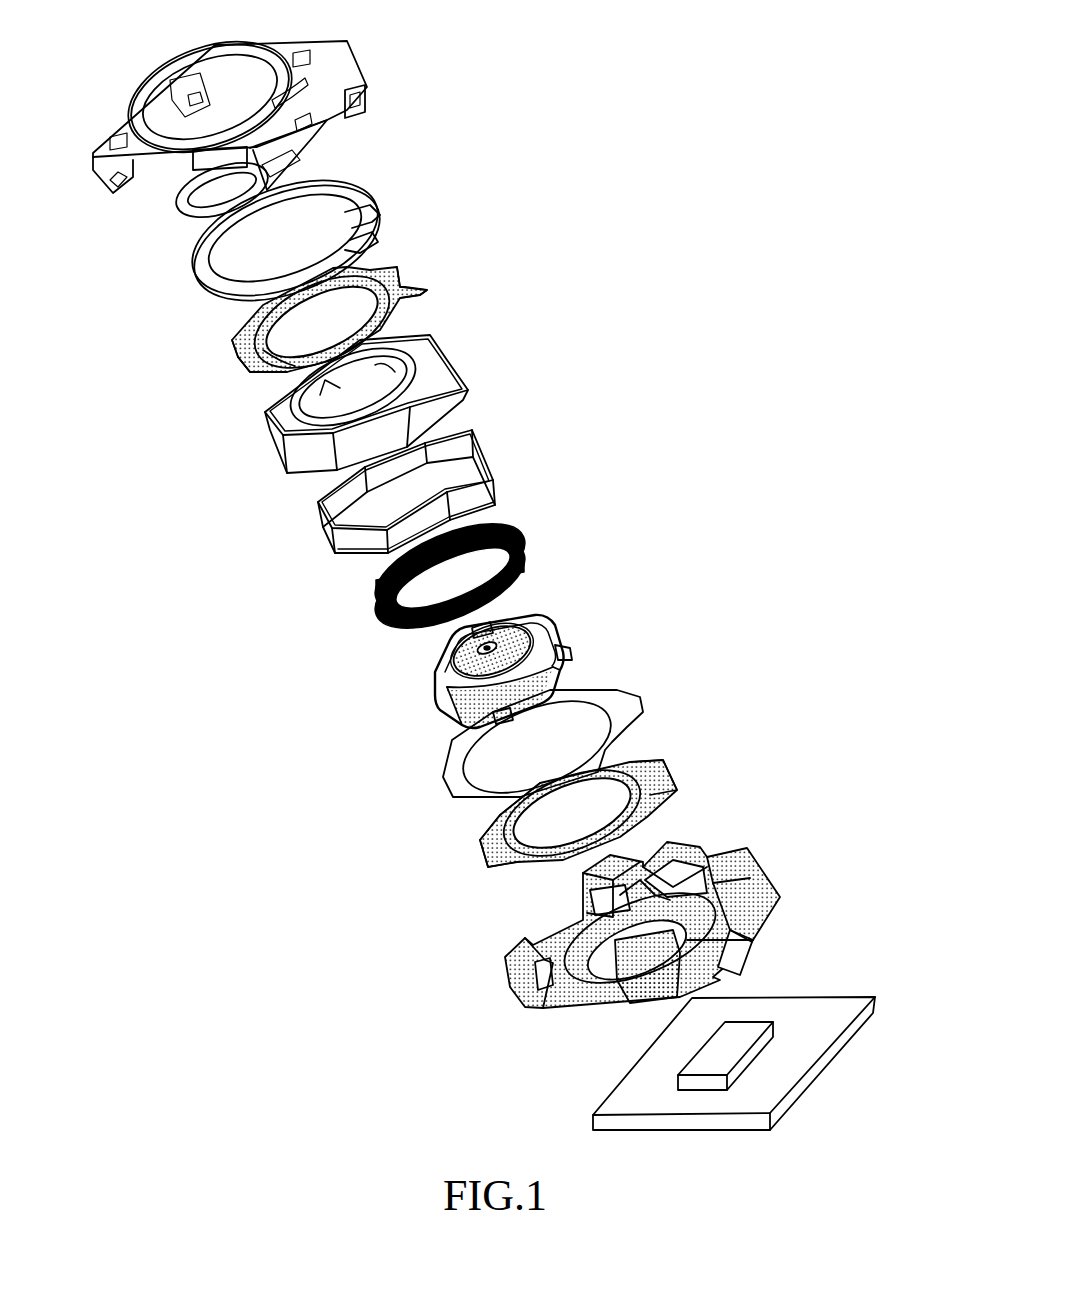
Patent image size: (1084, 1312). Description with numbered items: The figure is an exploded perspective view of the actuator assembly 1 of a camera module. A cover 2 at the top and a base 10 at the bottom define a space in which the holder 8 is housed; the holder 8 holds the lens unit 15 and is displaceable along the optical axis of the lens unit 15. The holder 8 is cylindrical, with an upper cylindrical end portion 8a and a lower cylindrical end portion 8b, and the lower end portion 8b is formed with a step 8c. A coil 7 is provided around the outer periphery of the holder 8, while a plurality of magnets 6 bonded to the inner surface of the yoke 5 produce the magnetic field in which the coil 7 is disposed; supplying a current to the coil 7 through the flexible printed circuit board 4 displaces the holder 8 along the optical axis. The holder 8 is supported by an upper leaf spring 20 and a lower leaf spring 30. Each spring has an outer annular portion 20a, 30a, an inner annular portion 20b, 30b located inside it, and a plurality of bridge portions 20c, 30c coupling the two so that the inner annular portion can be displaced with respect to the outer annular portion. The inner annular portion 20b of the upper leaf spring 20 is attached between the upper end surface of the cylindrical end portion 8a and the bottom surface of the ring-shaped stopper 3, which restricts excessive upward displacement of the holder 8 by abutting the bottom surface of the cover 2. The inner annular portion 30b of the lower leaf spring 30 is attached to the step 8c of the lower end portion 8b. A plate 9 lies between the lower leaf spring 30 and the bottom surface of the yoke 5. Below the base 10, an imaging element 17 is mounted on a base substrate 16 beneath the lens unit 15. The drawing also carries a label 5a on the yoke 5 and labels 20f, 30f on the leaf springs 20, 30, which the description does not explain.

The actuator assembly 1 is at (596, 196).
The cover 2 is at (345, 70).
The stopper 3 is at (187, 217).
The flexible printed circuit board 4 is at (370, 193).
The yoke 5 is at (472, 350).
The lens opening 5a is at (420, 330).
The magnets 6 is at (483, 452).
The coil 7 is at (512, 558).
The holder 8 is at (570, 648).
The upper cylindrical end portion 8a is at (522, 625).
The lower cylindrical end portion 8b is at (480, 735).
The step 8c is at (610, 690).
The plate 9 is at (610, 713).
The base 10 is at (777, 873).
The lens unit 15 is at (447, 650).
The base substrate 16 is at (757, 1080).
The imaging element 17 is at (730, 1037).
The upper leaf spring 20 is at (400, 283).
The outer annular portion 20a is at (237, 368).
The inner annular portion 20b is at (273, 367).
The bridge portions 20c is at (232, 350).
The upper spring tab 20f is at (400, 263).
The lower leaf spring 30 is at (660, 780).
The outer annular portion 30a is at (493, 833).
The inner annular portion 30b is at (520, 810).
The bridge portions 30c is at (497, 853).
The lower spring tab 30f is at (640, 760).